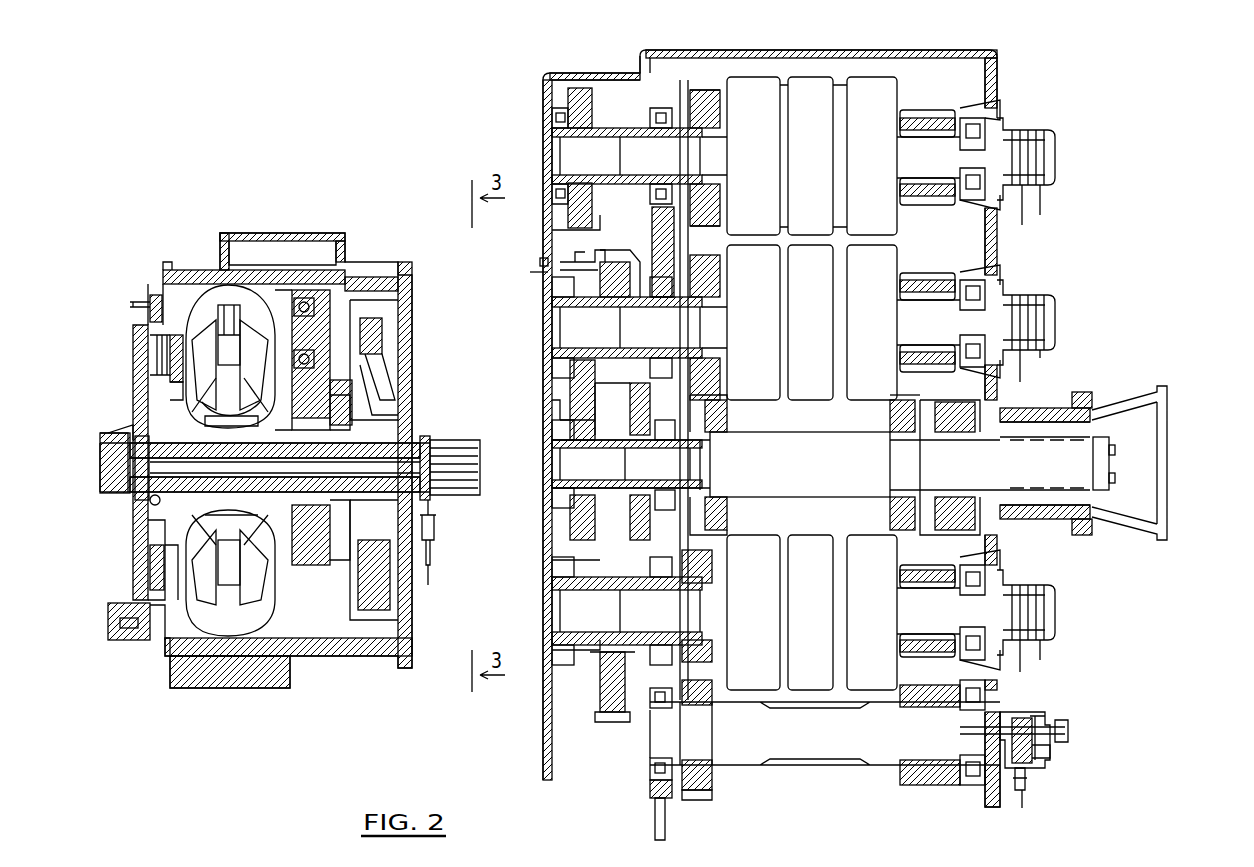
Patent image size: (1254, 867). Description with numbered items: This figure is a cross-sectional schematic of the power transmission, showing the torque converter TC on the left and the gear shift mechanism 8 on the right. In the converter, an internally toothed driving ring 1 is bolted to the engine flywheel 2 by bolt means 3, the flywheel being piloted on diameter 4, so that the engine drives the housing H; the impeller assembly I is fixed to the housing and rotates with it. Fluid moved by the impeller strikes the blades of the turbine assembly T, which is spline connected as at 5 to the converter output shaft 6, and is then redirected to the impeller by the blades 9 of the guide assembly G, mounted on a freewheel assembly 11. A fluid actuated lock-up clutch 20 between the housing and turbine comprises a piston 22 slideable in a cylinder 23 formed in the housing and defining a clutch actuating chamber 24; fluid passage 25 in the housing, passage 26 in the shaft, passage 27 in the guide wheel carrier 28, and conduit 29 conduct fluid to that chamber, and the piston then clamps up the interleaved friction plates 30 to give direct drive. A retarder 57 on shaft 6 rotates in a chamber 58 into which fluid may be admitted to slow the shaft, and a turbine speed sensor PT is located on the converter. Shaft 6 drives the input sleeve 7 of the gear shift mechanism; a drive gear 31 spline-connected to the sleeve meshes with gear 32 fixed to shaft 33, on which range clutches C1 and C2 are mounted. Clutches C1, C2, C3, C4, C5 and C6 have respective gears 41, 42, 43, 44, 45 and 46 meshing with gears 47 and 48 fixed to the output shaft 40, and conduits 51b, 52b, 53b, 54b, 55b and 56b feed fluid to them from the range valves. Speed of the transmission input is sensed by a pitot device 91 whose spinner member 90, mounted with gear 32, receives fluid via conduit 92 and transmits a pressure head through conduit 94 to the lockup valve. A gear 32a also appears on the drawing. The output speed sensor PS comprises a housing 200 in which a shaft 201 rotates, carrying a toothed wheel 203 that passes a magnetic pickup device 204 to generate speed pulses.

The internally toothed driving ring 1 is at (158, 632).
The engine flywheel 2 is at (108, 623).
The bolt means 3 is at (130, 632).
The pilot diameter 4 is at (107, 422).
The spline connection 5 is at (100, 460).
The converter output shaft 6 is at (440, 440).
The input sleeve 7 is at (556, 480).
The gear shift mechanism 8 is at (1103, 292).
The guide blades 9 is at (232, 398).
The freewheel assembly 11 is at (285, 455).
The lock-up clutch 20 is at (141, 362).
The piston 22 is at (148, 562).
The cylinder 23 is at (148, 586).
The clutch actuating chamber 24 is at (145, 550).
The fluid passage 25 is at (118, 446).
The shaft passage 26 is at (140, 478).
The carrier passage 27 is at (362, 408).
The guide wheel carrier 28 is at (330, 398).
The conduit 29 is at (390, 378).
The interleaved friction plates 30 is at (157, 350).
The drive gear 31 is at (632, 392).
The gear 32 is at (636, 262).
The gear 32a is at (593, 104).
The shaft 33 is at (627, 320).
The output shaft 40 is at (820, 475).
The gear 41 is at (693, 256).
The gear 42 is at (918, 275).
The gear 43 is at (702, 88).
The gear 44 is at (920, 112).
The gear 45 is at (718, 540).
The gear 46 is at (902, 538).
The gear 47 is at (716, 403).
The gear 48 is at (892, 408).
The conduit 51b is at (1020, 382).
The conduit 52b is at (1040, 356).
The conduit 53b is at (1022, 225).
The conduit 54b is at (1040, 207).
The conduit 55b is at (1020, 672).
The conduit 56b is at (1040, 652).
The retarder 57 is at (378, 332).
The retarder chamber 58 is at (378, 606).
The spinner member 90 is at (600, 250).
The pitot device 91 is at (578, 252).
The conduit 92 is at (537, 280).
The conduit 94 is at (533, 264).
The sensor housing 200 is at (1050, 756).
The sensor shaft 201 is at (990, 722).
The toothed wheel 203 is at (1040, 728).
The magnetic pickup device 204 is at (1022, 780).
The output speed sensor PS is at (1048, 750).
The turbine speed sensor PT is at (436, 538).
The torque converter TC is at (366, 676).
The turbine assembly T is at (208, 366).
The impeller assembly I is at (258, 366).
The guide assembly G is at (230, 397).
The housing H is at (280, 605).
The range clutch C1 is at (780, 322).
The range clutch C2 is at (872, 322).
The range clutch C3 is at (787, 156).
The range clutch C4 is at (872, 156).
The range clutch C5 is at (780, 612).
The range clutch C6 is at (872, 612).